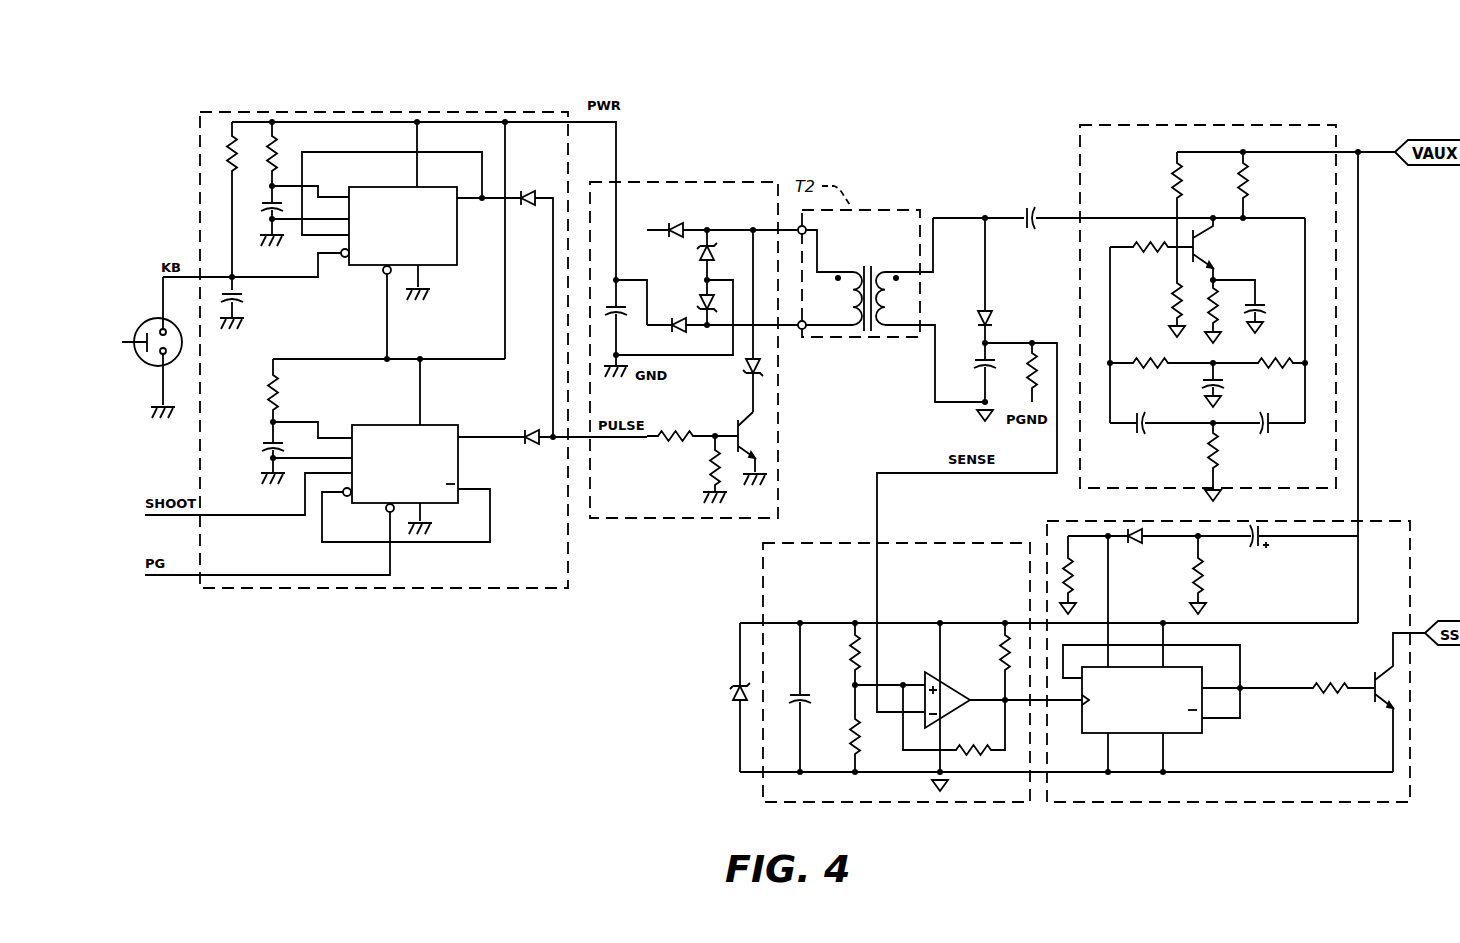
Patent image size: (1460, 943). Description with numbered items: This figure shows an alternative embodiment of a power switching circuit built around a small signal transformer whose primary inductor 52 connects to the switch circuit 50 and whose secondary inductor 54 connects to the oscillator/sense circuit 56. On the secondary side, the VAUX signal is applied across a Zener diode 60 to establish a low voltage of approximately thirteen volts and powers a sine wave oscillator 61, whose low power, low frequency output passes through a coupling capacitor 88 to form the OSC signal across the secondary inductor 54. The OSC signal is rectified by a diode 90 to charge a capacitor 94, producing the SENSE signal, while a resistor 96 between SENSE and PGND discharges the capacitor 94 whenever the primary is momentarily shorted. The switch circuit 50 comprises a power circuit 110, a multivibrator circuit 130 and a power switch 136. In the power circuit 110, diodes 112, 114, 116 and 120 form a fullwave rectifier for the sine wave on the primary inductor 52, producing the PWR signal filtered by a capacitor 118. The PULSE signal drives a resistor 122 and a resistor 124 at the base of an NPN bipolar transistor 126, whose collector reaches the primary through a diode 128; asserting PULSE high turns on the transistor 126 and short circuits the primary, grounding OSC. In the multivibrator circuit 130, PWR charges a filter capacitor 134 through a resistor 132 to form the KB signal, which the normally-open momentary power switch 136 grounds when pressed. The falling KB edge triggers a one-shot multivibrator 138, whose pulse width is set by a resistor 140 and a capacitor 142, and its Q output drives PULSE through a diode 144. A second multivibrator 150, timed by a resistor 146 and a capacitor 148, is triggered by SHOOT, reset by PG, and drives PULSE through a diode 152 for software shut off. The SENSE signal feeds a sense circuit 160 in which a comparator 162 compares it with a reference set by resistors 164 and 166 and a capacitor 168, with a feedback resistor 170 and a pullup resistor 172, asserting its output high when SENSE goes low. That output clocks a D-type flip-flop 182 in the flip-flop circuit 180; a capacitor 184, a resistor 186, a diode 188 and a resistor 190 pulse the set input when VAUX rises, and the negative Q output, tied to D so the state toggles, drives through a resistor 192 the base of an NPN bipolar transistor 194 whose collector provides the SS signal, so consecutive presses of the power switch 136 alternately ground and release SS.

The switch circuit 50 is at (667, 98).
The oscillator/sense circuit 56 is at (897, 105).
The primary inductor 52 is at (850, 300).
The secondary inductor 54 is at (891, 293).
The Zener diode 60 is at (732, 695).
The sine wave oscillator 61 is at (1172, 122).
The coupling capacitor 88 is at (1024, 216).
The diode 90 is at (988, 314).
The capacitor 94 is at (973, 363).
The resistor 96 is at (1028, 374).
The power circuit 110 is at (704, 179).
The diode 112 is at (672, 220).
The diode 114 is at (715, 248).
The diode 116 is at (680, 330).
The capacitor 118 is at (620, 316).
The diode 120 is at (700, 302).
The resistor 122 is at (678, 427).
The resistor 124 is at (714, 468).
The NPN bipolar transistor 126 is at (734, 426).
The diode 128 is at (748, 366).
The multivibrator circuit 130 is at (280, 112).
The resistor 132 is at (230, 152).
The filter capacitor 134 is at (244, 297).
The power switch 136 is at (137, 318).
The multivibrator 138 is at (440, 266).
The resistor 140 is at (278, 150).
The capacitor 142 is at (262, 206).
The diode 144 is at (532, 192).
The resistor 146 is at (284, 392).
The capacitor 148 is at (262, 446).
The multivibrator 150 is at (388, 426).
The diode 152 is at (522, 431).
The sense circuit 160 is at (856, 538).
The comparator 162 is at (926, 678).
The resistor 164 is at (846, 658).
The resistor 166 is at (852, 726).
The capacitor 168 is at (830, 688).
The resistor 170 is at (973, 745).
The resistor 172 is at (1000, 672).
The flip-flop circuit 180 is at (1048, 516).
The D-type flip-flop 182 is at (1185, 735).
The capacitor 184 is at (1252, 547).
The resistor 186 is at (1196, 580).
The diode 188 is at (1136, 544).
The resistor 190 is at (1064, 562).
The resistor 192 is at (1332, 680).
The NPN bipolar transistor 194 is at (1368, 672).